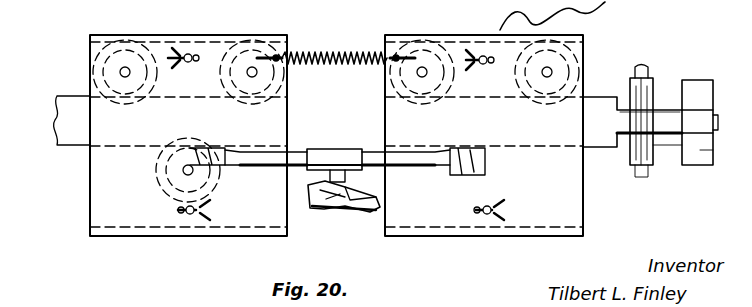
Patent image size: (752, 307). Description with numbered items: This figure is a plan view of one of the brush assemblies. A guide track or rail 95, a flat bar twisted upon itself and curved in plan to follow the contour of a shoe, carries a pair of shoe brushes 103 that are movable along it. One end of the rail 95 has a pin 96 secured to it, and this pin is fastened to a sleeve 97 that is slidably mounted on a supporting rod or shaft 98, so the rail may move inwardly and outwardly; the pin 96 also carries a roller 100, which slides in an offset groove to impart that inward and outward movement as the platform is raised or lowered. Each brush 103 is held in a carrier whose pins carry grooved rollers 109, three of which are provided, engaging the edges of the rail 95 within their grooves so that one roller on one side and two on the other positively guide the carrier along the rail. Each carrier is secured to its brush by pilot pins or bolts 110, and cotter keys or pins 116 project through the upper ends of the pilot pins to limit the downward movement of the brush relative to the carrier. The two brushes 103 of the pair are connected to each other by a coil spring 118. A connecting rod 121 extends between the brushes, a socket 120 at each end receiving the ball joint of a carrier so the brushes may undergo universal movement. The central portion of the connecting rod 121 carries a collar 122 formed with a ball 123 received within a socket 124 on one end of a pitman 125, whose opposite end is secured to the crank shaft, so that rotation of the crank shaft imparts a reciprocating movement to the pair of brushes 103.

The guide track or rail 95 is at (66, 108).
The pin 96 is at (664, 144).
The sleeve 97 is at (660, 86).
The supporting rod or shaft 98 is at (642, 68).
The roller 100 is at (726, 146).
The shoe brush 103 is at (235, 36).
The grooved roller 109 is at (142, 32).
The pilot pin or bolt 110 is at (182, 66).
The cotter key or pin 116 is at (188, 54).
The coil spring 118 is at (318, 52).
The socket 120 is at (221, 148).
The connecting rod 121 is at (396, 151).
The collar 122 is at (345, 150).
The ball 123 is at (312, 191).
The socket 124 is at (316, 209).
The pitman 125 is at (375, 200).